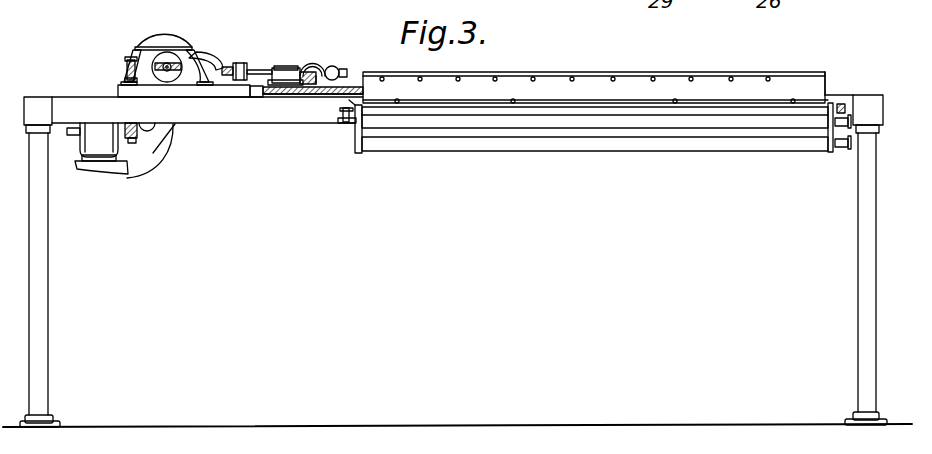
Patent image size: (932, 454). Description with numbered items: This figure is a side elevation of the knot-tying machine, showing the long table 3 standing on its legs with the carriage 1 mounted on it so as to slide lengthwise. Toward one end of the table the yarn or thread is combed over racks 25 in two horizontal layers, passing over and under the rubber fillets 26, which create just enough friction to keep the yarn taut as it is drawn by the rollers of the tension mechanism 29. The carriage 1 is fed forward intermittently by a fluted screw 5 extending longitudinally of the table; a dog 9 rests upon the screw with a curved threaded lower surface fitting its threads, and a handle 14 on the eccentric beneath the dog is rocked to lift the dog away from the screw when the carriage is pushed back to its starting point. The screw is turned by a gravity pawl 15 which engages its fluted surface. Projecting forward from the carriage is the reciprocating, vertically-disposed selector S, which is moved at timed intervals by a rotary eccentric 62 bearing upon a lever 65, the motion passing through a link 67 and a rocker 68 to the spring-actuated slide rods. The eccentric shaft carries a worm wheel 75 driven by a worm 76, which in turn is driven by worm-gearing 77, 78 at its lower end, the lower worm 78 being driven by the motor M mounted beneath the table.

The carriage 1 is at (204, 92).
The table 3 is at (30, 262).
The fluted screw 5 is at (344, 93).
The dog 9 is at (308, 90).
The handle 14 is at (299, 70).
The gravity pawl 15 is at (272, 68).
The racks 25 is at (817, 87).
The rubber fillets 26 is at (648, 71).
The tension mechanism 29 is at (352, 121).
The rotary eccentric 62 is at (197, 55).
The lever 65 is at (134, 52).
The link 67 is at (160, 45).
The rocker 68 is at (223, 68).
The worm wheel 75 is at (181, 42).
The worm 76 is at (126, 64).
The worm-gearing 77 is at (130, 143).
The worm 78 is at (137, 128).
The motor M is at (97, 148).
The selector S is at (342, 70).